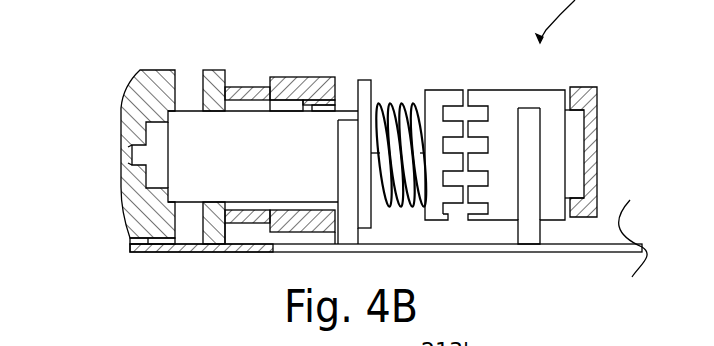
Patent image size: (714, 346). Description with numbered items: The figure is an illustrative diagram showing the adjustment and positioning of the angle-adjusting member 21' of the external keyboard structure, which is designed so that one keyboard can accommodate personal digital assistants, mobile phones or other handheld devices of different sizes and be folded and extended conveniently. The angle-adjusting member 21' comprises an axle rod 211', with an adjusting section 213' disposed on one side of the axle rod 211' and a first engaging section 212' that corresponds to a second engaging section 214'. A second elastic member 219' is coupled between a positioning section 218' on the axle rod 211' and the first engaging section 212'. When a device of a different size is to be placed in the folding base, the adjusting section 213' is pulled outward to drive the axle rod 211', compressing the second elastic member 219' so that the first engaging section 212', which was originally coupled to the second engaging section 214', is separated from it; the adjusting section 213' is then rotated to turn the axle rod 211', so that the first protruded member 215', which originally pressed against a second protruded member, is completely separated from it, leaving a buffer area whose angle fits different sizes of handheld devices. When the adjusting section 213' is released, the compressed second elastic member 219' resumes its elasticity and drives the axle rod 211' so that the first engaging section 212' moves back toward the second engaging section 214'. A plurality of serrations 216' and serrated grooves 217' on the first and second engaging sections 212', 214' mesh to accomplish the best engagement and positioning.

The angle-adjusting member 21' is at (388, 273).
The axle rod 211' is at (262, 137).
The first engaging section 212' is at (464, 192).
The adjusting section 213' is at (110, 157).
The second engaging section 214' is at (553, 145).
The first protruded member 215' is at (269, 141).
The serrations 216' is at (464, 108).
The serrated grooves 217' is at (498, 130).
The positioning section 218' is at (393, 140).
The second elastic member 219' is at (402, 132).